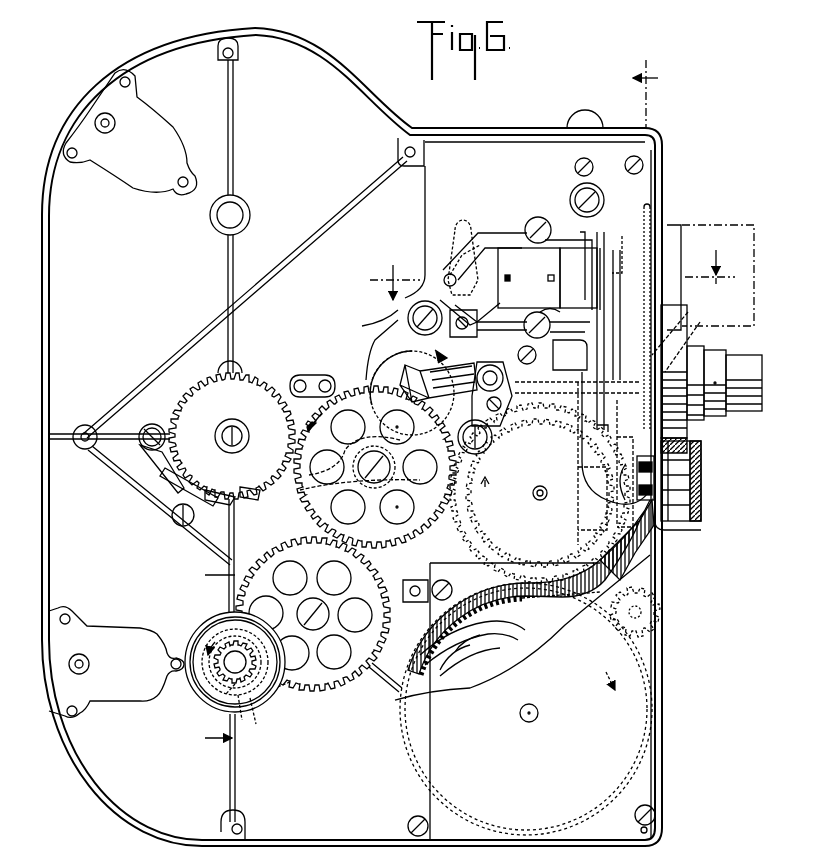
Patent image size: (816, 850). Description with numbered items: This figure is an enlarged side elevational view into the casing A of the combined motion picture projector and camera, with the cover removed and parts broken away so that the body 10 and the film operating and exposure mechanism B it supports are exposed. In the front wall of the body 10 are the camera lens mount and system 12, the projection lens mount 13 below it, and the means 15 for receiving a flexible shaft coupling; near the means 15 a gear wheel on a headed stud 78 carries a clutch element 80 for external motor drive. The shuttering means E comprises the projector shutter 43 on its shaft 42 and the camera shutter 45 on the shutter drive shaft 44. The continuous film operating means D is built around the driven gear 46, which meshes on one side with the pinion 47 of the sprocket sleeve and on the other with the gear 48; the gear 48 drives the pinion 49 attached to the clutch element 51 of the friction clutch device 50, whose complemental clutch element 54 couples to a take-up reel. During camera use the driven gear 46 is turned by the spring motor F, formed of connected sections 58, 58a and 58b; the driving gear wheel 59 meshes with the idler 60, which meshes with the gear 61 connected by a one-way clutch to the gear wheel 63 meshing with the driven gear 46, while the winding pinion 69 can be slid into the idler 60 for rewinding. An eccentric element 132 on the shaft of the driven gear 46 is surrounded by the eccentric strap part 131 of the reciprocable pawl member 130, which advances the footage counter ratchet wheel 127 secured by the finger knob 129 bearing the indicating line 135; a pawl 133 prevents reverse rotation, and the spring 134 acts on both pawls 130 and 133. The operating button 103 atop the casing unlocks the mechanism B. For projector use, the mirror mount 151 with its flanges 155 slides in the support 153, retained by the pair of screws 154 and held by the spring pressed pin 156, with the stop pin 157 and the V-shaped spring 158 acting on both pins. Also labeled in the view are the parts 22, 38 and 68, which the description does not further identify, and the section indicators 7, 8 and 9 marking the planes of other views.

The body 10 is at (522, 128).
The casing A is at (455, 134).
The operating button 103 is at (592, 112).
The section line 9 is at (655, 94).
The section line 7 is at (552, 269).
The section line 8 is at (209, 658).
The support 153 is at (572, 212).
The screws 154 is at (538, 217).
The mirror mount 151 is at (522, 245).
The spring pressed pin 156 is at (506, 240).
The V-shaped spring 158 is at (458, 242).
The stop pin 157 is at (447, 273).
The pivot screws 38 is at (428, 303).
The flanges 155 is at (505, 313).
The shaft of the projector shutter 42 is at (616, 326).
The projector shutter 43 is at (664, 222).
The projection lens mount 13 is at (682, 246).
The film shuttering or exposure means E is at (682, 335).
The camera shutter 45 is at (700, 357).
The pivot 68 is at (492, 364).
The shutter drive shaft 44 is at (557, 385).
The film operating and exposure mechanism B is at (368, 348).
The cam disc 22 is at (382, 347).
The continuous film operating means D is at (353, 388).
The pinion 47 is at (420, 382).
The ratchet wheel 127 is at (196, 392).
The indicating line 135 is at (226, 426).
The finger knob 129 is at (243, 428).
The driven gear 46 is at (313, 440).
The eccentric element 132 is at (415, 420).
The eccentric strap part 131 is at (410, 482).
The gear wheel 63 is at (688, 445).
The camera lens mount and system 12 is at (714, 402).
The clutch element 80 is at (660, 479).
The means for detachably receiving the coupling end of a flexible shaft 15 is at (680, 522).
The headed stud 78 is at (645, 502).
The gear 61 is at (627, 540).
The idler 60 is at (656, 578).
The winding pinion 69 is at (666, 619).
The driving gear wheel 59 is at (482, 618).
The spring motor F is at (620, 731).
The motor section 58 is at (460, 640).
The motor section 58a is at (452, 657).
The motor section 58b is at (440, 672).
The pawl 133 is at (160, 462).
The spring 134 is at (172, 500).
The reciprocable pawl member 130 is at (246, 508).
The gear 48 is at (315, 677).
The pinion 49 is at (268, 694).
The friction clutch device 50 is at (192, 692).
The clutch element 51 is at (215, 705).
The complemental clutch element 54 is at (244, 716).